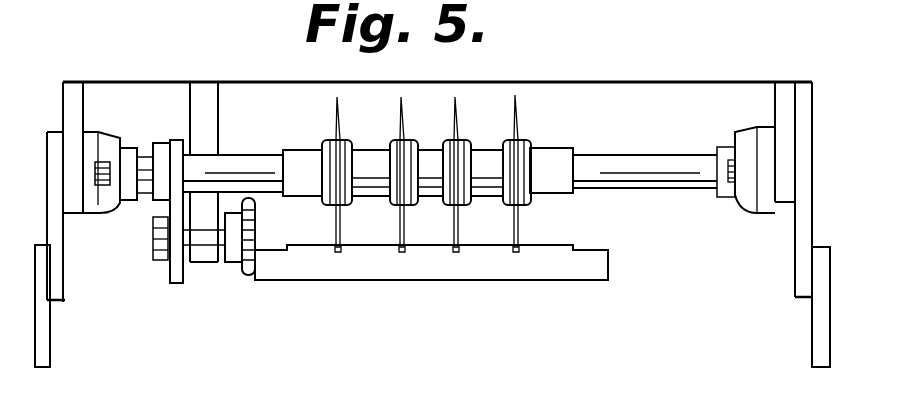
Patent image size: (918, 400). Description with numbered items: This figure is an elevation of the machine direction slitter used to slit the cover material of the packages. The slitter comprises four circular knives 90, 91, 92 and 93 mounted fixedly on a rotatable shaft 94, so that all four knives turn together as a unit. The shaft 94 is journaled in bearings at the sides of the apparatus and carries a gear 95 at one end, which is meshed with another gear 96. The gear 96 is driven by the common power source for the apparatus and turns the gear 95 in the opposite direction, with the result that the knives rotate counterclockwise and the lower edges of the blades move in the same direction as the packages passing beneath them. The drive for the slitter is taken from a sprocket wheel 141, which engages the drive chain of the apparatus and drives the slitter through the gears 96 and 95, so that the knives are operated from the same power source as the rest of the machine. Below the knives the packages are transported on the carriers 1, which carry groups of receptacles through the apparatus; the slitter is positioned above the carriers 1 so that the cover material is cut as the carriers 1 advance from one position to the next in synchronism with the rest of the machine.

The carrier 1 is at (590, 270).
The circular knife 90 is at (334, 118).
The circular knife 91 is at (398, 118).
The circular knife 92 is at (452, 118).
The circular knife 93 is at (513, 113).
The rotatable shaft 94 is at (645, 137).
The gear 95 is at (175, 154).
The gear 96 is at (175, 283).
The sprocket wheel 141 is at (250, 217).